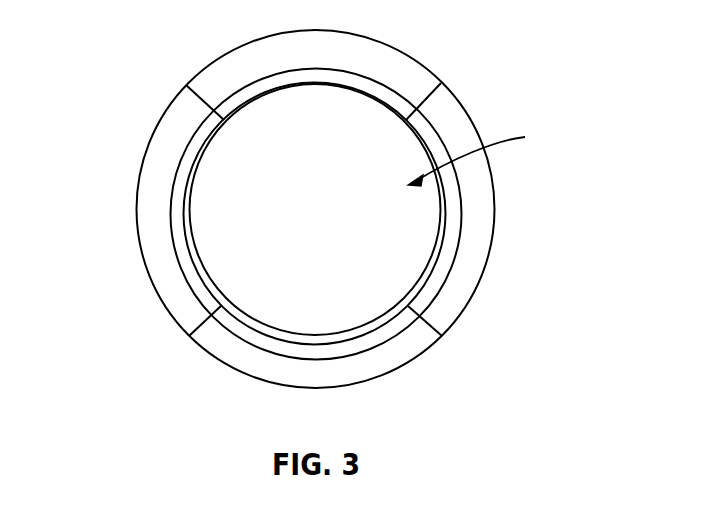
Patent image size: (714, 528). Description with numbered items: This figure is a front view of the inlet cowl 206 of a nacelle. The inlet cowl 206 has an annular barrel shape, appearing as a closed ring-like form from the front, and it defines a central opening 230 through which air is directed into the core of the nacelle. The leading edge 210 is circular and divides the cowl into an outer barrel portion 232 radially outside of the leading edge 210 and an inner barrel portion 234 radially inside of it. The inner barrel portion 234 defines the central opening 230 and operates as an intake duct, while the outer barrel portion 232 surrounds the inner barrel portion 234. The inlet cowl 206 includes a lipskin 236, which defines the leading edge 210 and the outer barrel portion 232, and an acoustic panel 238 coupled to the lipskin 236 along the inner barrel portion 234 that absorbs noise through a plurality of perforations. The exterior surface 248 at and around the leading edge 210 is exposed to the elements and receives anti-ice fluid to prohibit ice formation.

The inlet cowl 206 is at (183, 100).
The leading edge 210 is at (170, 225).
The central opening 230 is at (495, 153).
The exterior surface 248 is at (470, 188).
The outer barrel portion 232 is at (470, 270).
The lipskin 236 is at (173, 283).
The inner barrel portion 234 is at (423, 283).
The acoustic panel 238 is at (202, 275).